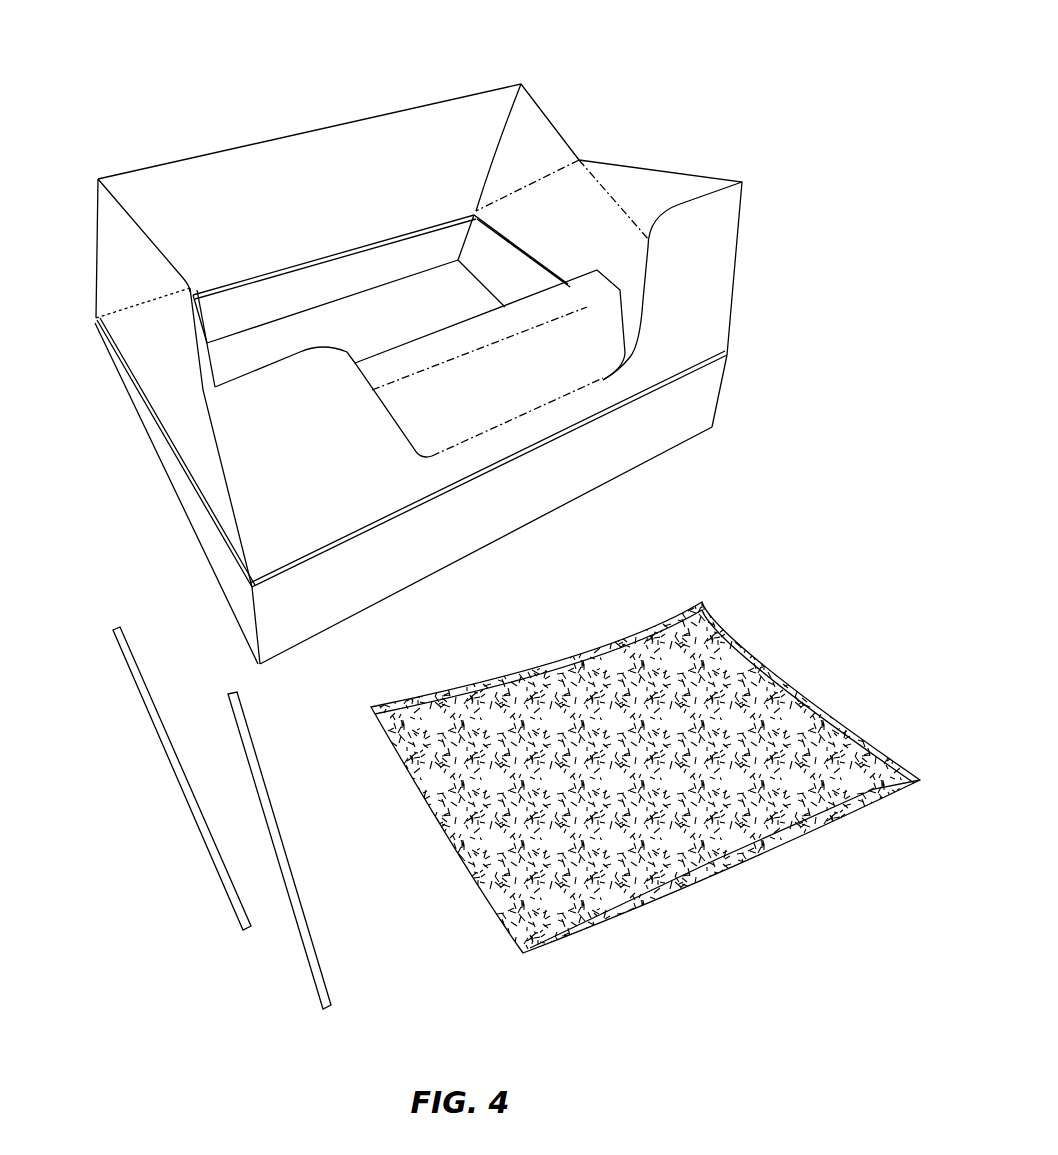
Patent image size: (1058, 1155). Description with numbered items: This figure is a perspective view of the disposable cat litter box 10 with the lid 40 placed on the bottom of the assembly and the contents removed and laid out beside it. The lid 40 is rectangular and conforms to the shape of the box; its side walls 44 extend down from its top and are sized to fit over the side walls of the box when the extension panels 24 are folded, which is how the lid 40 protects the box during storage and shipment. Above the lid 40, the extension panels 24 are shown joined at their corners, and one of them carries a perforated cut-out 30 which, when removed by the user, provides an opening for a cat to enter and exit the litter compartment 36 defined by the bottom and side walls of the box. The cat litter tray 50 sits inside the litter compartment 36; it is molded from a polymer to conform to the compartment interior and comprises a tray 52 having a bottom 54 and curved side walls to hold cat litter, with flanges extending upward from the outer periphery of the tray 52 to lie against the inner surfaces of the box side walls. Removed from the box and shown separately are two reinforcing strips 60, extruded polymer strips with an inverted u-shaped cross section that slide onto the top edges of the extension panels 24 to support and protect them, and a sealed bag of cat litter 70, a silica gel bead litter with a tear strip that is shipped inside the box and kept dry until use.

The cat litter box 10 is at (681, 76).
The extension panels 24 is at (299, 175).
The perforated cut-out 30 is at (475, 330).
The litter compartment 36 is at (333, 256).
The lid 40 is at (502, 543).
The side walls 44 is at (230, 577).
The cat litter tray 50 is at (401, 222).
The tray 52 is at (369, 346).
The bottom 54 is at (286, 288).
The reinforcing strips 60 is at (230, 889).
The cat litter 70 is at (816, 723).